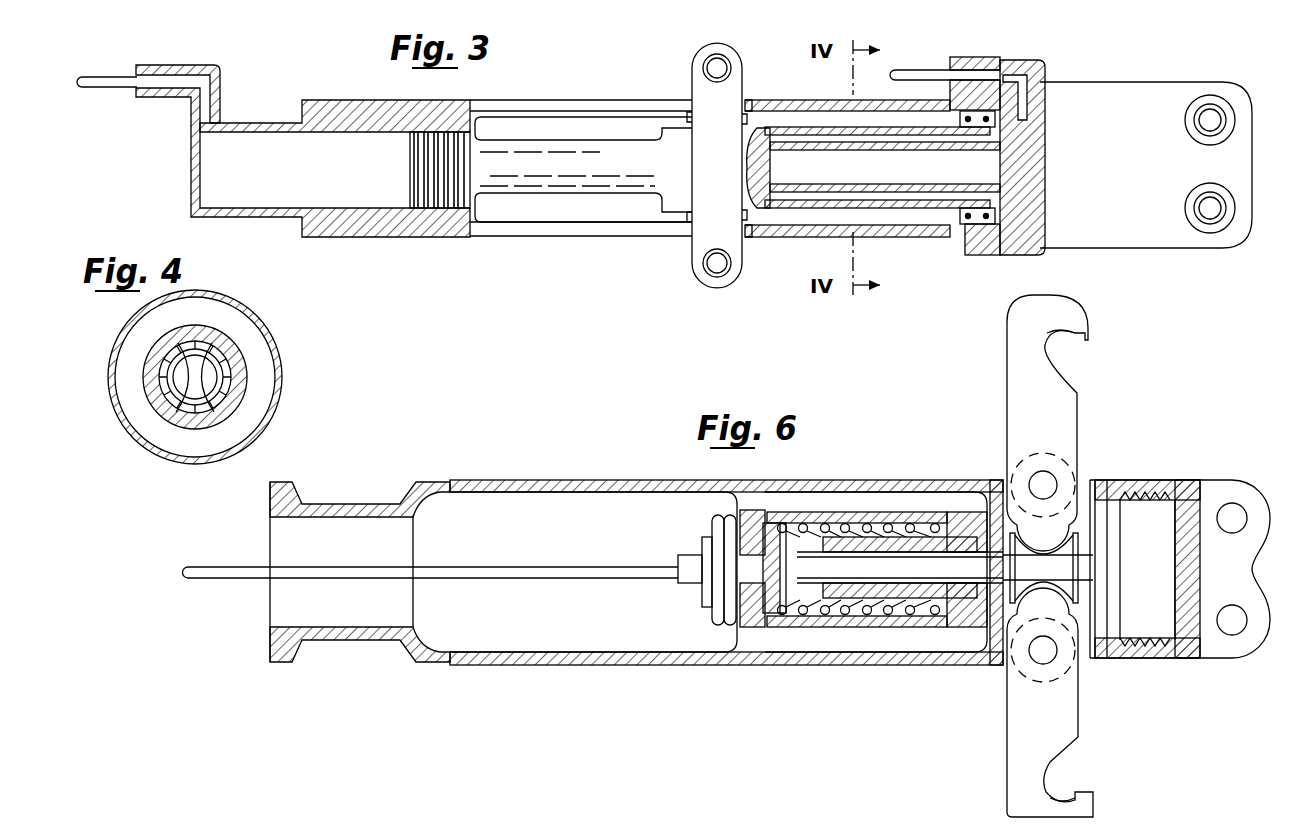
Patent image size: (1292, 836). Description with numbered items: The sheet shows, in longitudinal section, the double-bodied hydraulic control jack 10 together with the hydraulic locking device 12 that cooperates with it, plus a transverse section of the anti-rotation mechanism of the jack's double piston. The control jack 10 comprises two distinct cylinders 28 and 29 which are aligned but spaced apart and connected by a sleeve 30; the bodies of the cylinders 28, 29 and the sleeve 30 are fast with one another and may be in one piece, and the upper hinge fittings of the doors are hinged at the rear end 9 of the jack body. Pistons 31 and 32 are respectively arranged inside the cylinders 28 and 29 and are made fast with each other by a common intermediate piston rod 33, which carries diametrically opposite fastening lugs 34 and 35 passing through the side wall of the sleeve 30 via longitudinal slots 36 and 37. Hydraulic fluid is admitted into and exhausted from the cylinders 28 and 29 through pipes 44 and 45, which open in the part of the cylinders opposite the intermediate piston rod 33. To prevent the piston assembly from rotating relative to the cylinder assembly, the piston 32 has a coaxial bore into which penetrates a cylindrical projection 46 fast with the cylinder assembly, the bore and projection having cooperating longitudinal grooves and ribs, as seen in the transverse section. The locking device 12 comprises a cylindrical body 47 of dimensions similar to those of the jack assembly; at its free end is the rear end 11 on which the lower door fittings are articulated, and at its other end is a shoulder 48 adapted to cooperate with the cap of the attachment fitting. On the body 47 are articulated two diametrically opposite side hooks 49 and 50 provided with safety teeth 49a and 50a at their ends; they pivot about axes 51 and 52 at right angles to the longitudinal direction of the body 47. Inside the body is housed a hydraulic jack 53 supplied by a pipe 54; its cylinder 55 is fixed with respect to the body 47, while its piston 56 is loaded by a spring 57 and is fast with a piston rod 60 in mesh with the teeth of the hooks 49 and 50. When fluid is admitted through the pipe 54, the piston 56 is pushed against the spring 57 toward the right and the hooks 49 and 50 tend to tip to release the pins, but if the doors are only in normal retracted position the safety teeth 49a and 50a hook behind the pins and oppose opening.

In FIG. 3, the rear end 9 is at (1233, 156).
In FIG. 3, the hydraulic control jack 10 is at (789, 84).
In FIG. 6, the rear end 11 is at (1233, 650).
In FIG. 6, the hydraulic locking device 12 is at (600, 668).
In FIG. 3, the cylinder 28 is at (260, 123).
In FIG. 3, the cylinder 29 is at (912, 236).
In FIG. 4, the cylinder 29 is at (260, 330).
In FIG. 3, the sleeve 30 is at (568, 208).
In FIG. 3, the piston 31 is at (455, 210).
In FIG. 3, the piston 32 is at (968, 233).
In FIG. 4, the piston 32 is at (242, 372).
In FIG. 3, the intermediate piston rod 33 is at (575, 165).
In FIG. 3, the fastening lug 34 is at (690, 250).
In FIG. 3, the fastening lug 35 is at (688, 90).
In FIG. 3, the longitudinal slot 36 is at (524, 228).
In FIG. 3, the longitudinal slot 37 is at (572, 105).
In FIG. 3, the pipe 44 is at (113, 88).
In FIG. 3, the pipe 45 is at (923, 75).
In FIG. 4, the cylindrical projection 46 is at (170, 407).
In FIG. 6, the cylindrical body 47 is at (703, 657).
In FIG. 6, the shoulder 48 is at (345, 640).
In FIG. 6, the side hook 49 is at (1017, 748).
In FIG. 6, the safety tooth 49a is at (1095, 800).
In FIG. 6, the side hook 50 is at (1012, 362).
In FIG. 6, the safety tooth 50a is at (1087, 334).
In FIG. 6, the axis 51 is at (1040, 655).
In FIG. 6, the axis 52 is at (1040, 480).
In FIG. 6, the hydraulic jack 53 is at (847, 632).
In FIG. 6, the pipe 54 is at (517, 567).
In FIG. 6, the cylinder 55 is at (803, 624).
In FIG. 6, the piston 56 is at (788, 530).
In FIG. 6, the spring 57 is at (845, 526).
In FIG. 6, the piston rod 60 is at (912, 567).